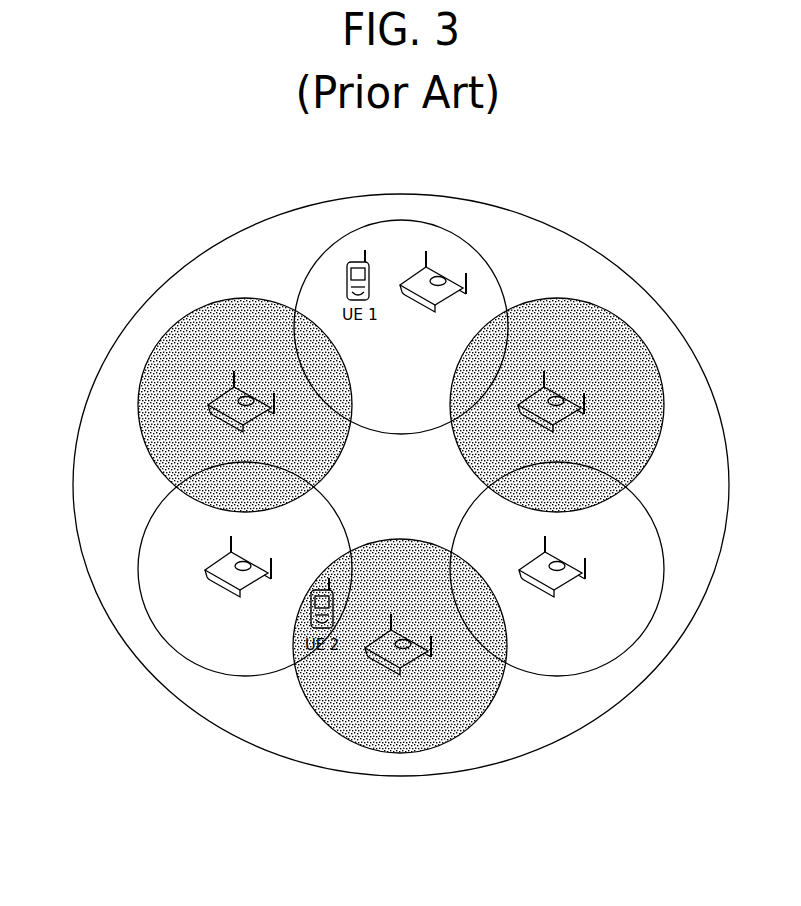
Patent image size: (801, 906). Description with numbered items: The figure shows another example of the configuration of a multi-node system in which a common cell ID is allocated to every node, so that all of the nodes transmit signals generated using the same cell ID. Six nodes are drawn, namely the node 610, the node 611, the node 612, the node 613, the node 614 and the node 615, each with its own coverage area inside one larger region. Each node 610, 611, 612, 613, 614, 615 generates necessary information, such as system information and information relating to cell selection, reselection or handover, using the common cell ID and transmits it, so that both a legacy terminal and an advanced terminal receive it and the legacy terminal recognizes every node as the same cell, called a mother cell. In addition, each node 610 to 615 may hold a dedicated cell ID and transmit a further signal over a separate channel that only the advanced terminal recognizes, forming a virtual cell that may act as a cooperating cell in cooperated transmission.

The node 610 is at (220, 393).
The node 611 is at (450, 273).
The node 612 is at (573, 417).
The node 613 is at (567, 593).
The node 614 is at (403, 663).
The node 615 is at (223, 592).